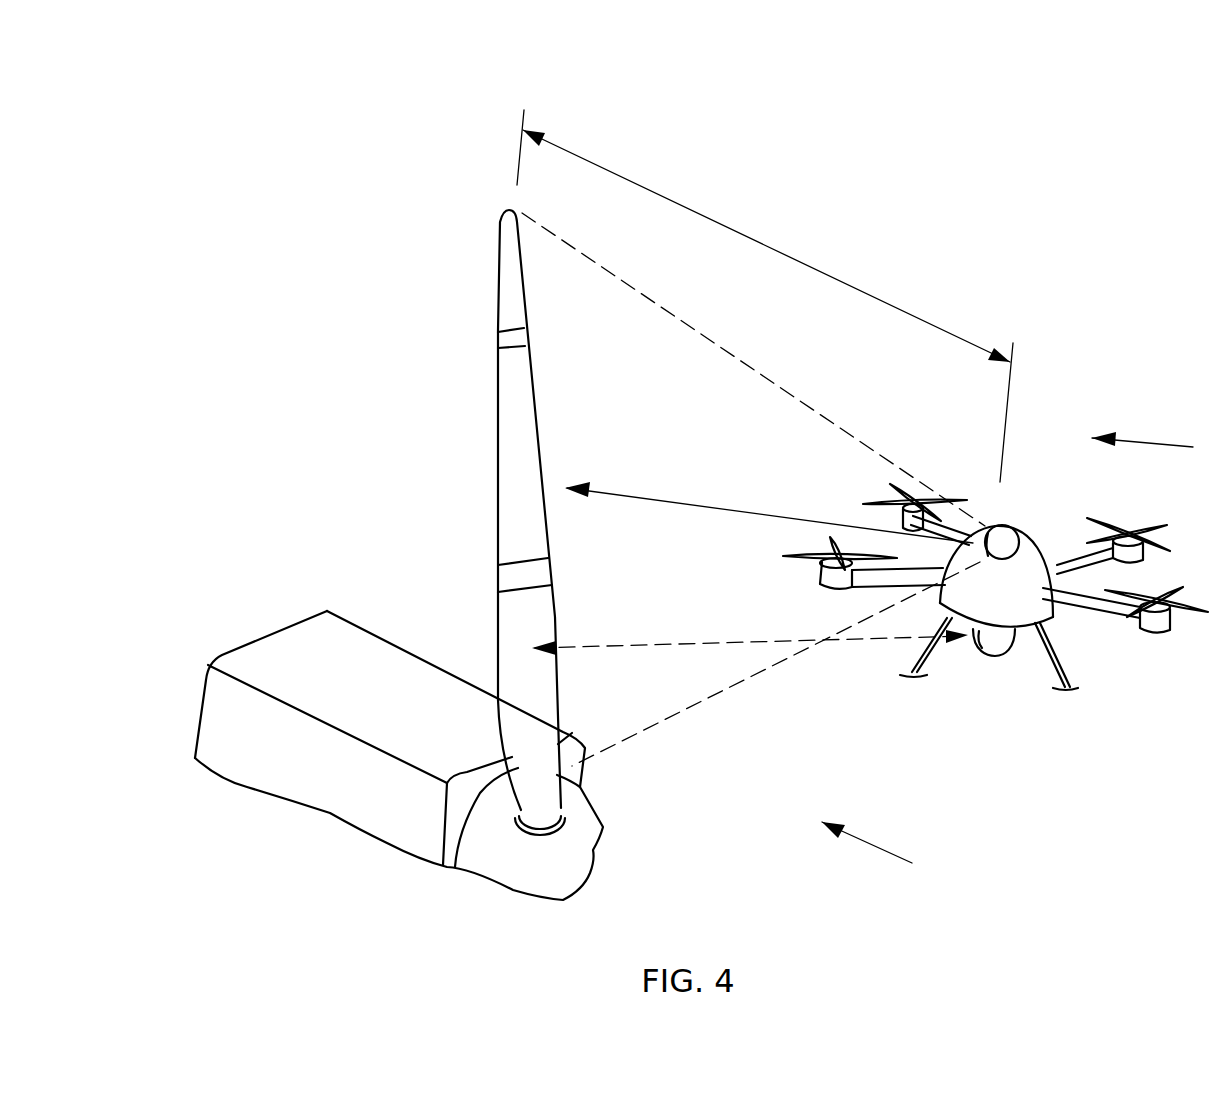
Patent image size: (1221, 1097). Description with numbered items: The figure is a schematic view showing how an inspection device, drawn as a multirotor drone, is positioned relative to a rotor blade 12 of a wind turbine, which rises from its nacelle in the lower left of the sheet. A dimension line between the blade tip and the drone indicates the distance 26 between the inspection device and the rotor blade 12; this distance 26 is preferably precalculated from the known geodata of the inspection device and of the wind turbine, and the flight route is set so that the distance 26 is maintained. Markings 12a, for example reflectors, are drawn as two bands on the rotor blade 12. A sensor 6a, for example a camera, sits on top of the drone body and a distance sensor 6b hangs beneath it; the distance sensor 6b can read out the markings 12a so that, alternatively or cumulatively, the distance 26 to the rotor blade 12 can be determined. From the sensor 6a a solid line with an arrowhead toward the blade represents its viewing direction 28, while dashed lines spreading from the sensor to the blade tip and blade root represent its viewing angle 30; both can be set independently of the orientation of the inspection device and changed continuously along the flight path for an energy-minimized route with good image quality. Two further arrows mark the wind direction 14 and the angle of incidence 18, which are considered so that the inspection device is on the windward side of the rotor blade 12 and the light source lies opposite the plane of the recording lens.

The sensor 6a is at (1002, 533).
The distance sensor 6b is at (995, 643).
The rotor blade 12 is at (510, 433).
The markings 12a is at (507, 340).
The wind direction 14 is at (872, 846).
The angle of incidence 18 is at (1147, 442).
The distance 26 is at (768, 250).
The viewing direction 28 is at (697, 503).
The viewing angle 30 is at (720, 347).